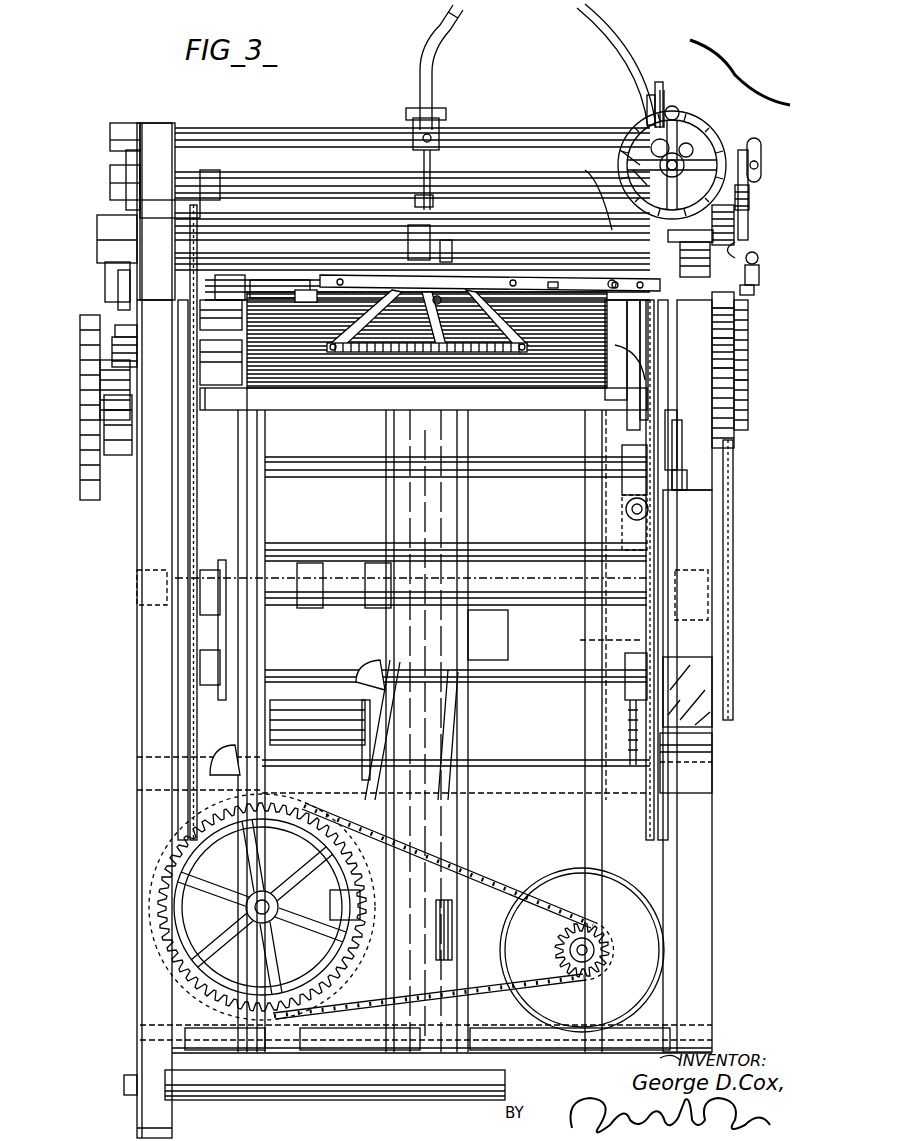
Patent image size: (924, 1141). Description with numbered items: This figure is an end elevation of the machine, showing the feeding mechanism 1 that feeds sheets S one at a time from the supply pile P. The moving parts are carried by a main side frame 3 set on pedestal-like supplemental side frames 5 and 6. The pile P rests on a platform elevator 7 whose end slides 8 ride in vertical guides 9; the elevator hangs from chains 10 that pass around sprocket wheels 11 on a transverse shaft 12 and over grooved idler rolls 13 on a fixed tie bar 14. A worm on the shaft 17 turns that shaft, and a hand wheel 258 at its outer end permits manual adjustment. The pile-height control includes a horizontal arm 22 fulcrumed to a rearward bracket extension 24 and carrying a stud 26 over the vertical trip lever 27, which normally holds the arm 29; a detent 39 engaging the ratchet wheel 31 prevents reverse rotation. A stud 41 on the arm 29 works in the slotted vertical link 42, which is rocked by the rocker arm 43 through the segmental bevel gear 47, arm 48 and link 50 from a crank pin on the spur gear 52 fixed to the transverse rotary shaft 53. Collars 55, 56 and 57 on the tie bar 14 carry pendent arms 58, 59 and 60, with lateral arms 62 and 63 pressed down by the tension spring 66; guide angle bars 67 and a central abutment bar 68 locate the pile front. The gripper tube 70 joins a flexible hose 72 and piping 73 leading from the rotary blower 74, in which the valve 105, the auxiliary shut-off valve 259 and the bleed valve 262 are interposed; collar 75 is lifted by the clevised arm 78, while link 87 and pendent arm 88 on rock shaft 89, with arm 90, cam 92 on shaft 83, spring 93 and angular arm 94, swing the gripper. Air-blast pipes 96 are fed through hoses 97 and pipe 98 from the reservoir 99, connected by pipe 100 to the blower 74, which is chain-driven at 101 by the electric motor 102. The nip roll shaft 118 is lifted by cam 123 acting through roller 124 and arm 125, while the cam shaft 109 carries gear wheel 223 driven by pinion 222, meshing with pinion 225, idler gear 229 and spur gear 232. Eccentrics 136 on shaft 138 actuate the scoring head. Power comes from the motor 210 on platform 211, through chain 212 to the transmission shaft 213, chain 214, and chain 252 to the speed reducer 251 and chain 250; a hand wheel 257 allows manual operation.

The feeding mechanism 1 is at (740, 72).
The main side frame 3 is at (682, 425).
The supplemental side frame 5 is at (705, 870).
The supplemental side frame 6 is at (140, 825).
The platform elevator 7 is at (300, 412).
The slide 8 is at (180, 435).
The vertical guide 9 is at (180, 374).
The chain 10 is at (190, 642).
The sprocket wheel 11 is at (154, 130).
The transverse shaft 12 is at (282, 205).
The grooved idler roll 13 is at (190, 262).
The tie bar 14 is at (280, 276).
The shaft 17 is at (680, 122).
The horizontal arm 22 is at (553, 282).
The rearward bracket extension 24 is at (672, 255).
The stud 26 is at (612, 282).
The vertical trip lever 27 is at (588, 192).
The arm 29 is at (740, 155).
The ratchet wheel 31 is at (640, 140).
The detent 39 is at (685, 122).
The stud 41 is at (760, 165).
The vertical link 42 is at (756, 140).
The rocker arm 43 is at (758, 256).
The segmental bevel gear 47 is at (745, 242).
The arm 48 is at (748, 303).
The link 50 is at (758, 275).
The spur gear 52 is at (750, 210).
The transverse rotary shaft 53 is at (320, 235).
The collar 55 is at (465, 262).
The collar 56 is at (425, 245).
The collar 57 is at (378, 285).
The pendent arm 58 is at (501, 346).
The pendent arm 59 is at (436, 349).
The pendent arm 60 is at (300, 395).
The lateral arm 62 is at (513, 280).
The lateral arm 63 is at (345, 285).
The tension spring 66 is at (427, 373).
The vertical guide angle bar 67 is at (252, 500).
The central vertical abutment bar 68 is at (425, 731).
The tube 70 is at (432, 82).
The flexible hose 72 is at (450, 20).
The piping 73 is at (660, 325).
The rotary blower 74 is at (205, 903).
The collar 75 is at (415, 118).
The clevised lifting arm 78 is at (440, 120).
The rotary shaft 83 is at (255, 180).
The link 87 is at (435, 195).
The pendent arm 88 is at (420, 163).
The rock shaft 89 is at (340, 135).
The arm 90 is at (122, 130).
The cam 92 is at (128, 158).
The helical spring 93 is at (640, 92).
The angular arm 94 is at (662, 85).
The vertical pipe 96 is at (268, 418).
The flexible hose 97 is at (388, 500).
The pipe 98 is at (445, 830).
The compressed air reservoir 99 is at (445, 945).
The pipe 100 is at (288, 760).
The sprocket chain connection 101 is at (485, 870).
The electric motor 102 is at (565, 880).
The valve 105 is at (655, 370).
The rotary shaft 109 is at (215, 345).
The transverse rotary shaft 118 is at (215, 305).
The cam 123 is at (120, 350).
The roller 124 is at (125, 330).
The arm 125 is at (130, 293).
The eccentric 136 is at (130, 270).
The shaft 138 is at (100, 405).
The electric motor 210 is at (505, 622).
The platform 211 is at (538, 785).
The speed reducing sprocket chain connection 212 is at (222, 700).
The transmission shaft 213 is at (500, 592).
The sprocket chain 214 is at (600, 572).
The spur pinion 222 is at (735, 405).
The gear wheel 223 is at (735, 350).
The spur pinion 225 is at (740, 320).
The idler spur gear 229 is at (752, 290).
The spur gear 232 is at (748, 192).
The sprocket chain connection 250 is at (735, 503).
The speed reducer 251 is at (700, 725).
The sprocket chain connection 252 is at (620, 640).
The hand wheel 257 is at (88, 500).
The hand wheel 258 is at (625, 140).
The auxiliary suction shut-off valve 259 is at (628, 510).
The regulatable bleed valve 262 is at (625, 685).
The supply pile P is at (427, 347).
The sheet S is at (285, 290).